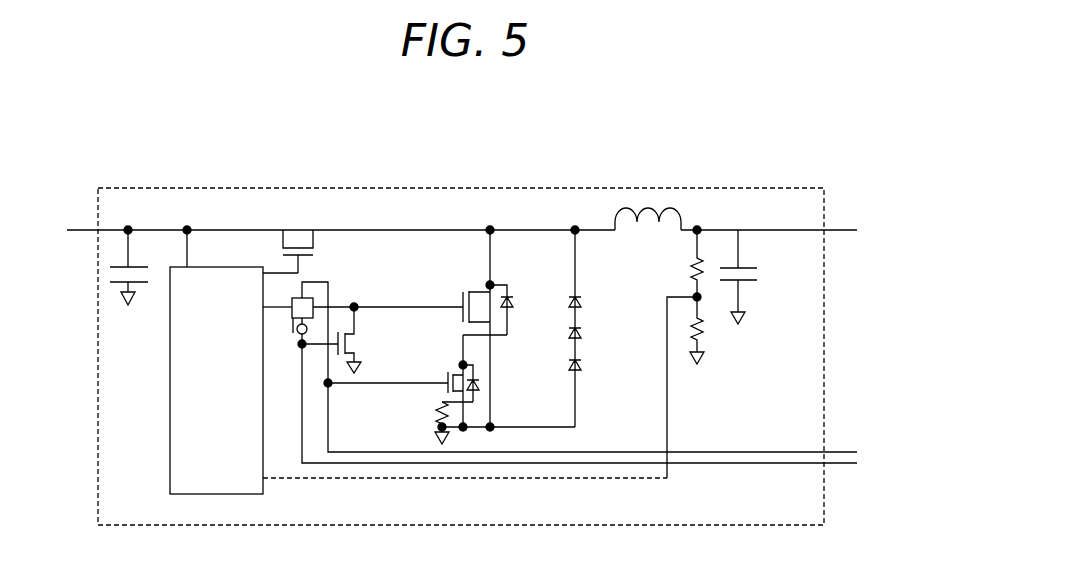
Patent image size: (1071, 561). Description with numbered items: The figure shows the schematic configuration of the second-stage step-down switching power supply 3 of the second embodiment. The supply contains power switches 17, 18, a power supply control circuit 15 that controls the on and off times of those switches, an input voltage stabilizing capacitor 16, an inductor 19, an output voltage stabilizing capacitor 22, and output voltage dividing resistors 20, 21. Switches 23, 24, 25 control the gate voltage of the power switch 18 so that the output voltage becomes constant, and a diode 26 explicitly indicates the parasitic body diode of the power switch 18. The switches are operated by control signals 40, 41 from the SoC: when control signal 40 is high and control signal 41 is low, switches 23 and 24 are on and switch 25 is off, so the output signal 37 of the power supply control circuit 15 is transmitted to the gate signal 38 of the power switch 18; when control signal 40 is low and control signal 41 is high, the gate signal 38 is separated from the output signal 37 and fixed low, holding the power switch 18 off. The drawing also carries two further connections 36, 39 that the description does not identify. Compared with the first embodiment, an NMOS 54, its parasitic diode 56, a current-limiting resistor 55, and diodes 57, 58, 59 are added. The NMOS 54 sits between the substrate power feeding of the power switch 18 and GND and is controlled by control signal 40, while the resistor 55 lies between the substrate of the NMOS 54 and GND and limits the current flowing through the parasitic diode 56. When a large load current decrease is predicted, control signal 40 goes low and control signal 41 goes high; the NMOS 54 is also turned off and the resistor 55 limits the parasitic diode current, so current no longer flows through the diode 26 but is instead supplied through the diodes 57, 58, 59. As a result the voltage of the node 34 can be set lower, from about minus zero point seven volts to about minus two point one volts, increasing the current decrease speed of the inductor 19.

The second-stage step-down switching power supply 3 is at (486, 188).
The power supply control circuit 15 is at (207, 268).
The input voltage stabilizing capacitor 16 is at (133, 268).
The power switch 17 is at (297, 237).
The power switch 18 is at (477, 290).
The inductor 19 is at (688, 216).
The output voltage dividing resistor 20 is at (690, 268).
The output voltage dividing resistor 21 is at (703, 338).
The output voltage stabilizing capacitor 22 is at (752, 268).
The switch 23 is at (315, 280).
The switch 24 is at (293, 336).
The switch 25 is at (362, 349).
The diode 26 is at (515, 302).
The node 34 is at (408, 229).
The control signal line 36 is at (274, 270).
The output signal 37 is at (279, 312).
The gate signal 38 is at (382, 305).
The ground line 39 is at (313, 479).
The control signal 40 is at (688, 453).
The control signal 41 is at (725, 464).
The NMOS 54 is at (450, 372).
The resistor for limiting a current 55 is at (437, 414).
The parasitic diode 56 is at (480, 386).
The diode 57 is at (585, 302).
The diode 58 is at (585, 334).
The diode 59 is at (585, 366).